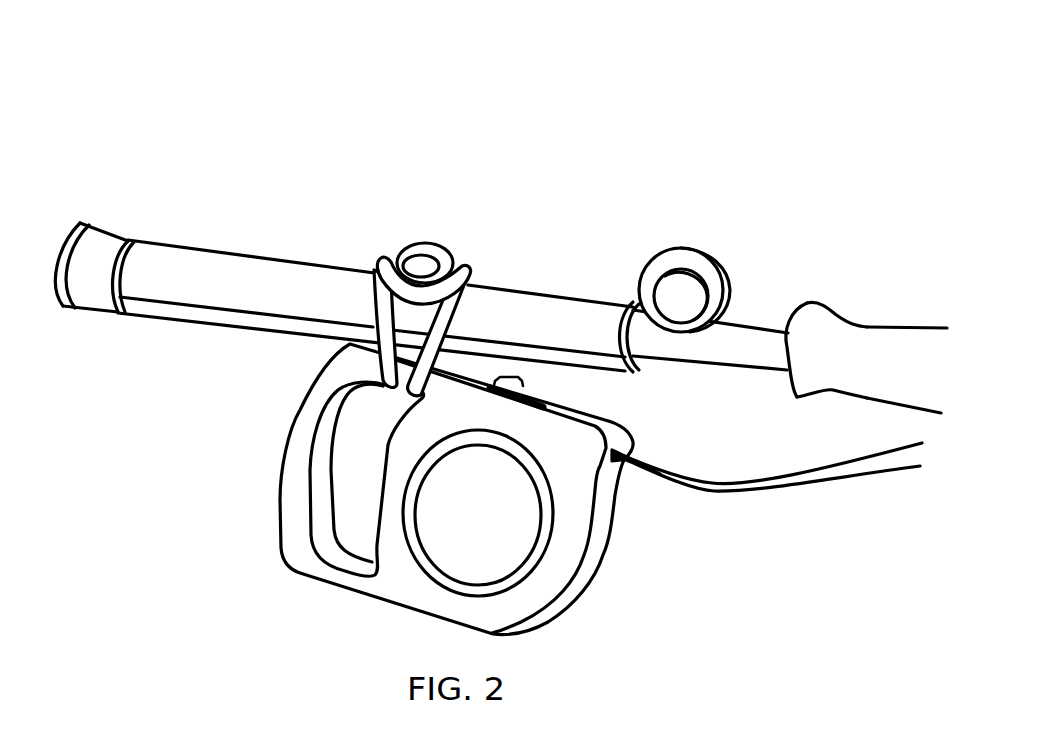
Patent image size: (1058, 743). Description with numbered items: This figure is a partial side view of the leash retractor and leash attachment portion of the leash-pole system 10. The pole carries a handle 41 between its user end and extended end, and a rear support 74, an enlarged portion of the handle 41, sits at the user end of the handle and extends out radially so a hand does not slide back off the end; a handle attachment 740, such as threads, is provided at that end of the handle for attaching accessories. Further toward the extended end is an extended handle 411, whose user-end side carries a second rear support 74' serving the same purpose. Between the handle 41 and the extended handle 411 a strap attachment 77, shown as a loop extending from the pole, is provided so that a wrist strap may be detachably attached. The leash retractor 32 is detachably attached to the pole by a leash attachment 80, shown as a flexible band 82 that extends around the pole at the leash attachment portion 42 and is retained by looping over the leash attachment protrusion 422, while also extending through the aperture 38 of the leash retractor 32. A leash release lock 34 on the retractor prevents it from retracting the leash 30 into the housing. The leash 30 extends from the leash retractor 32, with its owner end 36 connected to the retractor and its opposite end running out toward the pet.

The leash-pole system 10 is at (288, 158).
The handle attachment 740 is at (63, 258).
The rear support 74 is at (101, 232).
The handle 41 is at (207, 267).
The flexible band 82 is at (394, 258).
The leash attachment portion 42 is at (420, 243).
The leash attachment protrusion 422 is at (437, 256).
The leash attachment 80 is at (462, 275).
The strap attachment 77 is at (683, 255).
The rear support 74' is at (826, 308).
The extended handle 411 is at (873, 343).
The leash release lock 34 is at (523, 374).
The aperture 38 is at (340, 480).
The leash retractor 32 is at (558, 565).
The owner end 36 is at (622, 471).
The leash 30 is at (763, 485).